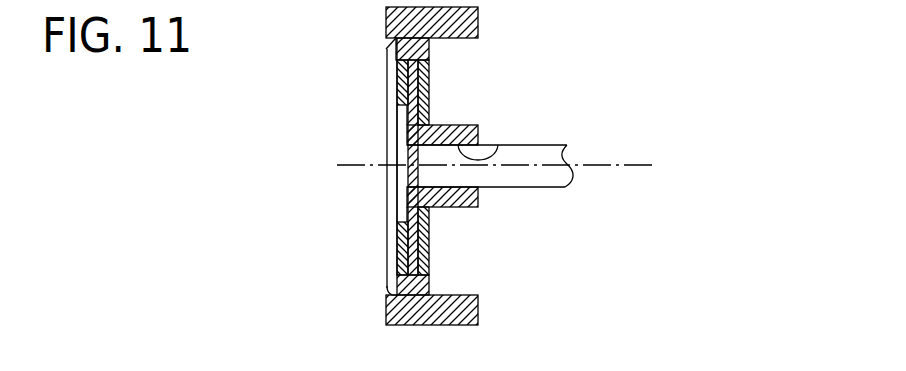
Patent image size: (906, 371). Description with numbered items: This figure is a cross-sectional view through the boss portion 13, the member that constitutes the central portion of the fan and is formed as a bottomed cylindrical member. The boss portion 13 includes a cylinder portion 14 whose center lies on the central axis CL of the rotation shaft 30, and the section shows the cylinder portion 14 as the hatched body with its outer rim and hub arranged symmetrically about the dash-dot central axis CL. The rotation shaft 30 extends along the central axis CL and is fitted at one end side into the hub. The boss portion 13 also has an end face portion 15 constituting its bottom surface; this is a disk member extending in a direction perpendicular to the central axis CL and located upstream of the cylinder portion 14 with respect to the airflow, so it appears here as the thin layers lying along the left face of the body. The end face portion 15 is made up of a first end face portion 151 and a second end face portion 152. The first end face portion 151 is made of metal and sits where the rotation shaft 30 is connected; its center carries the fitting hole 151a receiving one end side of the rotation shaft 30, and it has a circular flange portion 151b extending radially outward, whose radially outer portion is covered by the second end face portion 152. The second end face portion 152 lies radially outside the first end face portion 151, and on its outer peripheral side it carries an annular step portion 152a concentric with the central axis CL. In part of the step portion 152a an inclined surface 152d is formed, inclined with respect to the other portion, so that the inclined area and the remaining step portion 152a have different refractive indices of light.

The boss portion 13 is at (379, 324).
The cylinder portion 14 is at (479, 301).
The end face portion 15 is at (297, 200).
The first end face portion 151 is at (402, 212).
The fitting hole 151a is at (497, 147).
The flange portion 151b is at (413, 70).
The second end face portion 152 is at (397, 256).
The step portion 152a is at (387, 290).
The inclined surface 152d is at (386, 47).
The rotation shaft 30 is at (567, 143).
The central axis CL is at (688, 162).